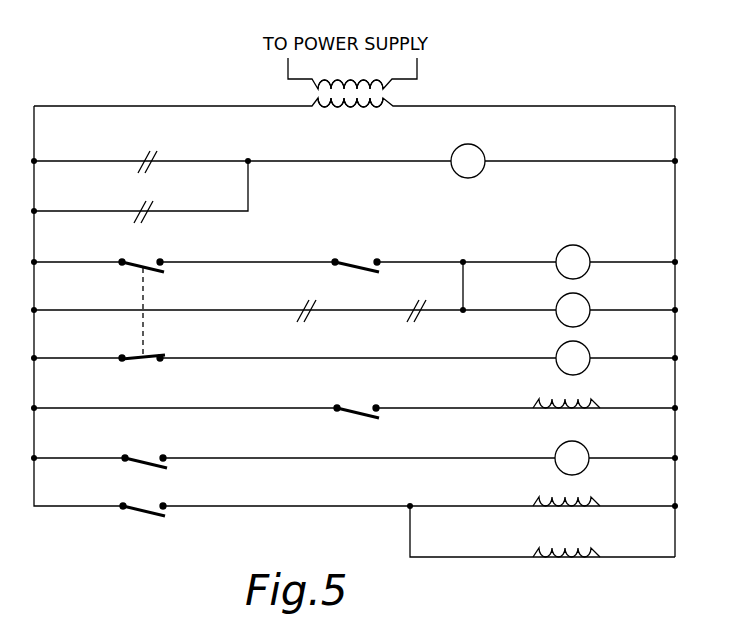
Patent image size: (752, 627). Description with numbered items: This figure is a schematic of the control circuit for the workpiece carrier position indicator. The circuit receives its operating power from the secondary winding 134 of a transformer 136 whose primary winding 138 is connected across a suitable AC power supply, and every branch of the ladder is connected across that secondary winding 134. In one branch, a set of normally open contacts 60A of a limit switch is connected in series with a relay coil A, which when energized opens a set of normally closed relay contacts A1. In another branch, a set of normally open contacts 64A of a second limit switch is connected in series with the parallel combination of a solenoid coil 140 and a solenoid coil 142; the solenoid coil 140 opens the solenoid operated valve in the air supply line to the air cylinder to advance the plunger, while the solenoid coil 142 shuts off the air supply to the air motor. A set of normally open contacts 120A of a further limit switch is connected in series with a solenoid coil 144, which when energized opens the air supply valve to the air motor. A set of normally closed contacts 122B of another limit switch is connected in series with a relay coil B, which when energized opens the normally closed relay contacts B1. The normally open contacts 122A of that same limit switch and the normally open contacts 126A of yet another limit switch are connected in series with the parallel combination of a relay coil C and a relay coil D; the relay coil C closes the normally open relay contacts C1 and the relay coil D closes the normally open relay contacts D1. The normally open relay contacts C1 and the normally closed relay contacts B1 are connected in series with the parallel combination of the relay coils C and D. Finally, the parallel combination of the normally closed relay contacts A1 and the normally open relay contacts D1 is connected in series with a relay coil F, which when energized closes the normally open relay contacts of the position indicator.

The transformer 136 is at (402, 92).
The primary winding 138 is at (312, 92).
The secondary winding 134 is at (345, 108).
The normally closed relay contacts A1 is at (143, 160).
The normally open relay contacts D1 is at (138, 210).
The normally open relay contacts C1 is at (296, 316).
The normally closed relay contacts B1 is at (416, 316).
The normally open contacts of limit switch 122A is at (134, 270).
The normally closed contacts of limit switch 122B is at (119, 374).
The normally open contacts of limit switch 126A is at (353, 264).
The normally open contacts of limit switch 120A is at (355, 410).
The normally open contacts of limit switch 60A is at (143, 462).
The normally open contacts of limit switch 64A is at (141, 510).
The relay coil F is at (468, 161).
The relay coil C is at (573, 262).
The relay coil D is at (573, 310).
The relay coil B is at (573, 358).
The relay coil A is at (572, 458).
The solenoid coil 144 is at (595, 400).
The solenoid coil 140 is at (591, 498).
The solenoid coil 142 is at (587, 549).